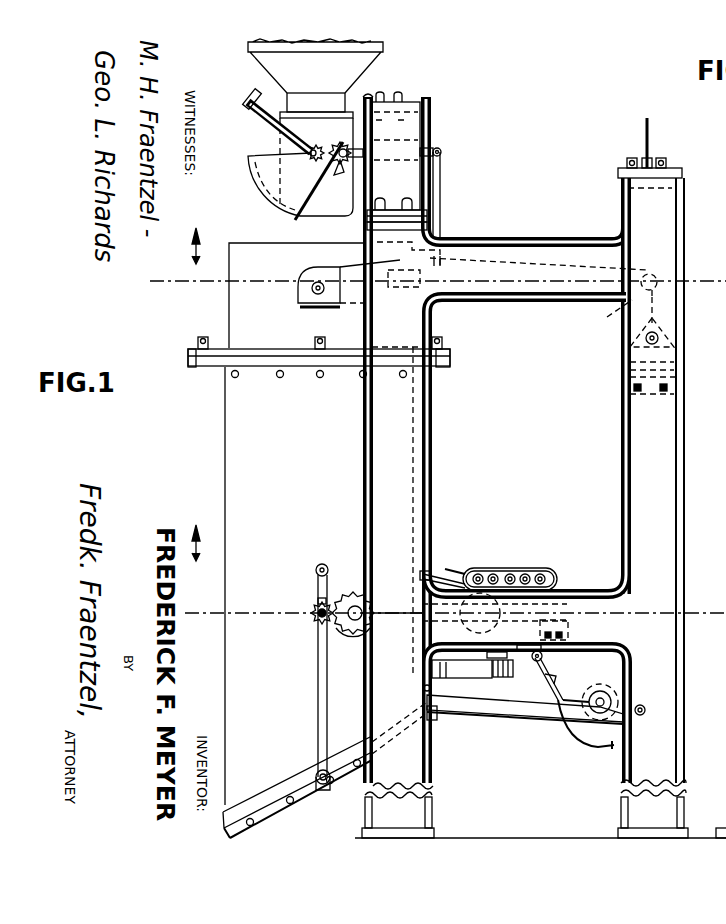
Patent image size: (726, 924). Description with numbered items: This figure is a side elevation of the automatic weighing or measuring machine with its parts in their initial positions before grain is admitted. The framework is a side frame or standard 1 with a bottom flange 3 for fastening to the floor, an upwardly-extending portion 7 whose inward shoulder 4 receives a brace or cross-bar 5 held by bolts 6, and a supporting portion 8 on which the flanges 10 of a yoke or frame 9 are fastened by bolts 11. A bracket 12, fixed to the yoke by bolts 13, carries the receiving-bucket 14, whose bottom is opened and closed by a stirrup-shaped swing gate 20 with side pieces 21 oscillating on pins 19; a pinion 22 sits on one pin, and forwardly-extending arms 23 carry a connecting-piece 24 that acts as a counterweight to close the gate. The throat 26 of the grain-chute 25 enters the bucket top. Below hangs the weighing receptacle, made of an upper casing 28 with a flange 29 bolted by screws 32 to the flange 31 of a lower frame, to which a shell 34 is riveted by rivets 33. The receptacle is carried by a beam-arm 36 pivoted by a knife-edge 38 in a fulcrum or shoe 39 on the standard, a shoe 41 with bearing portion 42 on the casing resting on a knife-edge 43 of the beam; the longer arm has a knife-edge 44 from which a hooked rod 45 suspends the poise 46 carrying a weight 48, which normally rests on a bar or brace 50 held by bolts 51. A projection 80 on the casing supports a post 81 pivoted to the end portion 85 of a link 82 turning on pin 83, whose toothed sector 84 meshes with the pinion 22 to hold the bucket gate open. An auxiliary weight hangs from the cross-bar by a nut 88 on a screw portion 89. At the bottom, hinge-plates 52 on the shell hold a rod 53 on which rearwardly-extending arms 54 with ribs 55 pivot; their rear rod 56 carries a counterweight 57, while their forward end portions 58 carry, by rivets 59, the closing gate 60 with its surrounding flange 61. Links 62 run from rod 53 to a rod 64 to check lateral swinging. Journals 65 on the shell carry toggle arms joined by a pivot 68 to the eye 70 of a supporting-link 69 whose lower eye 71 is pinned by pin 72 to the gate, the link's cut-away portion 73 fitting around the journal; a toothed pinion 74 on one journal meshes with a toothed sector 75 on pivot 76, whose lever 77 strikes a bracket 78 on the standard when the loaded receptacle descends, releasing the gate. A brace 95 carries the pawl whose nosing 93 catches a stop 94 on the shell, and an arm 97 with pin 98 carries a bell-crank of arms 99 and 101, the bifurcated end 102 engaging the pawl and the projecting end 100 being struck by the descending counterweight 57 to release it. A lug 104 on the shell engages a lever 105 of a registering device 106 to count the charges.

The side frame or standard 1 is at (628, 790).
The laterally-extending flange 3 is at (412, 830).
The inwardly-extending shoulder or projection 4 is at (670, 190).
The brace or cross-bar 5 is at (684, 170).
The bolts or screws 6 is at (629, 160).
The upwardly-extending portion 7 is at (452, 480).
The supporting portion 8 is at (366, 227).
The yoke or frame 9 is at (396, 156).
The flange 10 is at (428, 216).
The screws or bolts 11 is at (387, 200).
The bracket 12 is at (364, 95).
The bolts or screws 13 is at (382, 92).
The receiving-bucket 14 is at (307, 201).
The pins or pivots 19 is at (310, 156).
The swing gate or valve 20 is at (262, 190).
The side pieces 21 is at (272, 163).
The pinion 22 is at (314, 146).
The forwardly-extending arms 23 is at (276, 120).
The connecting-piece 24 is at (249, 98).
The grain-chute 25 is at (315, 66).
The throat 26 is at (316, 105).
The upper casing or frame 28 is at (229, 304).
The flange 29 is at (258, 355).
The flange 31 is at (214, 372).
The screws or bolts 32 is at (200, 339).
The rivets 33 is at (240, 378).
The shell 34 is at (319, 576).
The beam-arm 36 is at (356, 304).
The knife-edge 38 is at (401, 268).
The fulcrum or shoe 39 is at (396, 288).
The fulcrum or shoe 41 is at (298, 300).
The bearing or receiving portion 42 is at (318, 310).
The knife-edge 43 is at (311, 286).
The knife-edge 44 is at (640, 296).
The link or hooked rod 45 is at (656, 313).
The poise or weight 46 is at (676, 364).
The weight 48 is at (676, 338).
The bar or brace 50 is at (678, 377).
The screws or bolts 51 is at (640, 392).
The hinge-plates 52 is at (424, 689).
The rod 53 is at (436, 720).
The rearwardly-extending arms 54 is at (470, 712).
The rib 55 is at (586, 698).
The rod 56 is at (612, 700).
The counter weight or balance 57 is at (614, 690).
The forward end portions 58 is at (300, 796).
The rivets 59 is at (250, 826).
The closing gate or door 60 is at (289, 805).
The surrounding flange 61 is at (257, 797).
The links or rods 62 is at (552, 722).
The rod 64 is at (645, 710).
The pins or journals 65 is at (330, 600).
The pivot 68 is at (322, 566).
The supporting-link 69 is at (317, 583).
The eye 70 is at (316, 569).
The lower eye portion 71 is at (327, 781).
The bearing or pin 72 is at (322, 790).
The recessed or cut-away portion 73 is at (315, 620).
The toothed pinion 74 is at (316, 607).
The toothed sector 75 is at (356, 636).
The pivot or journal pin 76 is at (370, 609).
The rearwardly-extending arm or lever 77 is at (408, 620).
The lug or bracket 78 is at (569, 634).
The projection 80 is at (443, 267).
The post 81 is at (441, 186).
The link 82 is at (428, 147).
The pivot or pin 83 is at (340, 176).
The toothed sector 84 is at (339, 142).
The end portion 85 is at (442, 152).
The nut 88 is at (654, 158).
The screw portion 89 is at (650, 124).
The nosing 93 is at (438, 680).
The stop 94 is at (432, 669).
The brace or piece 95 is at (503, 678).
The arm 97 is at (544, 657).
The pivot or pin 98 is at (552, 681).
The arm 99 is at (546, 679).
The horizontally-projecting end 100 is at (608, 749).
The arm 101 is at (524, 646).
The bifurcated end 102 is at (487, 656).
The lug or projection 104 is at (422, 577).
The lever 105 is at (447, 567).
The numbering or registering device 106 is at (504, 570).